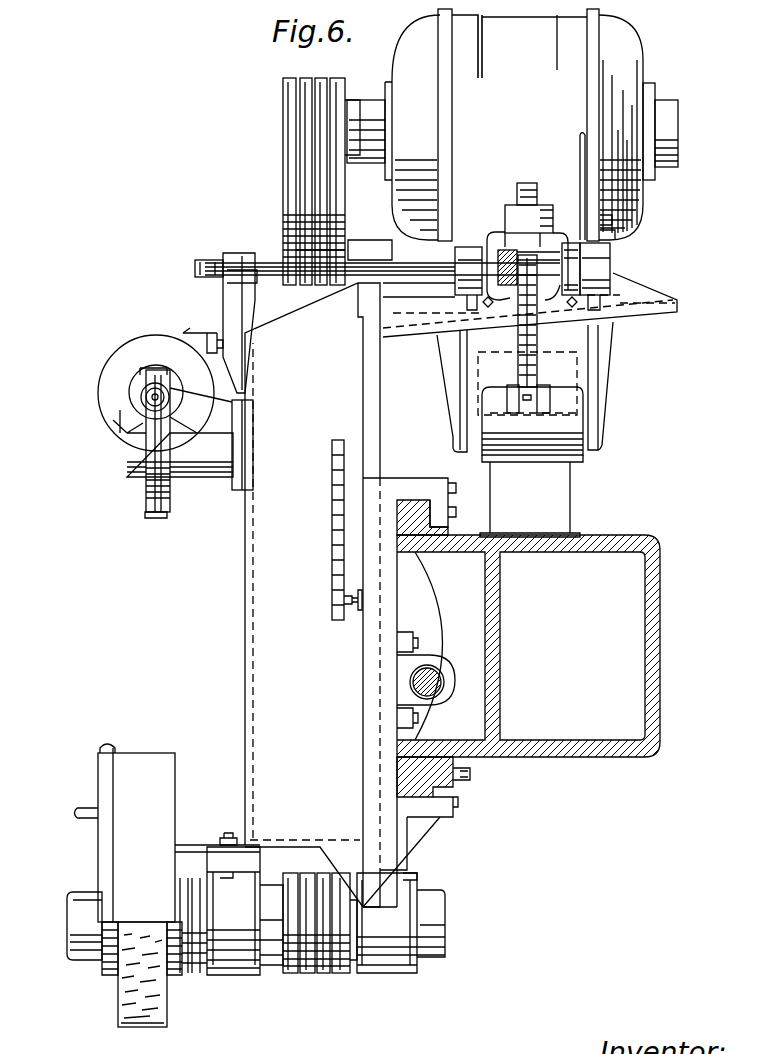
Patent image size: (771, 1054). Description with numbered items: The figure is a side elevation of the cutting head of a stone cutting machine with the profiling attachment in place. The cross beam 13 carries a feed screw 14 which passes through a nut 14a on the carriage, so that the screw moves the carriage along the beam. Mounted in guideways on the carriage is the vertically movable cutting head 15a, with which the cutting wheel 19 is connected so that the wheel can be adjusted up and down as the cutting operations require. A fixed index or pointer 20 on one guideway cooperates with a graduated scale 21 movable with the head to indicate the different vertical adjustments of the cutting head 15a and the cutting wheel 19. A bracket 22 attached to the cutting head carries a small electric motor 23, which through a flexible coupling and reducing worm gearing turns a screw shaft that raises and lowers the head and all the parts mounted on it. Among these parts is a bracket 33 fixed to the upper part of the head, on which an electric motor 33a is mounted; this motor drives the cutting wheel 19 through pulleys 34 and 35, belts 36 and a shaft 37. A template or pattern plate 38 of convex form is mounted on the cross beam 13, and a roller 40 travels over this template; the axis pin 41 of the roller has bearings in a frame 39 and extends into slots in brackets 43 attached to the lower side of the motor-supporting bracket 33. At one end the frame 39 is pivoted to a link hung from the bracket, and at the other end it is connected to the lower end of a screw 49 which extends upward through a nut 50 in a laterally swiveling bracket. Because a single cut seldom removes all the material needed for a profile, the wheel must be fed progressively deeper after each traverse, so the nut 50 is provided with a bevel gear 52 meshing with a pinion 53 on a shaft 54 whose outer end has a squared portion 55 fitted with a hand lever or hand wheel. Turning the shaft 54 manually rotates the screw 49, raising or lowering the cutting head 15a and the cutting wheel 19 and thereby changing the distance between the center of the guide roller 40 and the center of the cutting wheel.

The cross beam 13 is at (662, 583).
The feed screw 14 is at (442, 682).
The nut 14a is at (425, 655).
The cutting head 15a is at (285, 662).
The cutting wheel 19 is at (120, 993).
The fixed index or pointer 20 is at (345, 600).
The graduated scale 21 is at (334, 508).
The bracket 22 is at (206, 336).
The small electric motor 23 is at (128, 348).
The bracket 33 is at (650, 308).
The electric motor 33a is at (627, 68).
The pulley 34 is at (285, 118).
The pulley 35 is at (285, 948).
The belts 36 is at (288, 203).
The shaft 37 is at (275, 930).
The template or pattern plate 38 is at (558, 515).
The frame 39 is at (495, 372).
The roller 40 is at (560, 448).
The axis pin 41 is at (600, 418).
The brackets 43 is at (446, 372).
The screw 49 is at (522, 185).
The nut 50 is at (508, 200).
The bevel gear 52 is at (562, 205).
The pinion 53 is at (500, 300).
The shaft 54 is at (271, 262).
The squared portion 55 is at (205, 262).